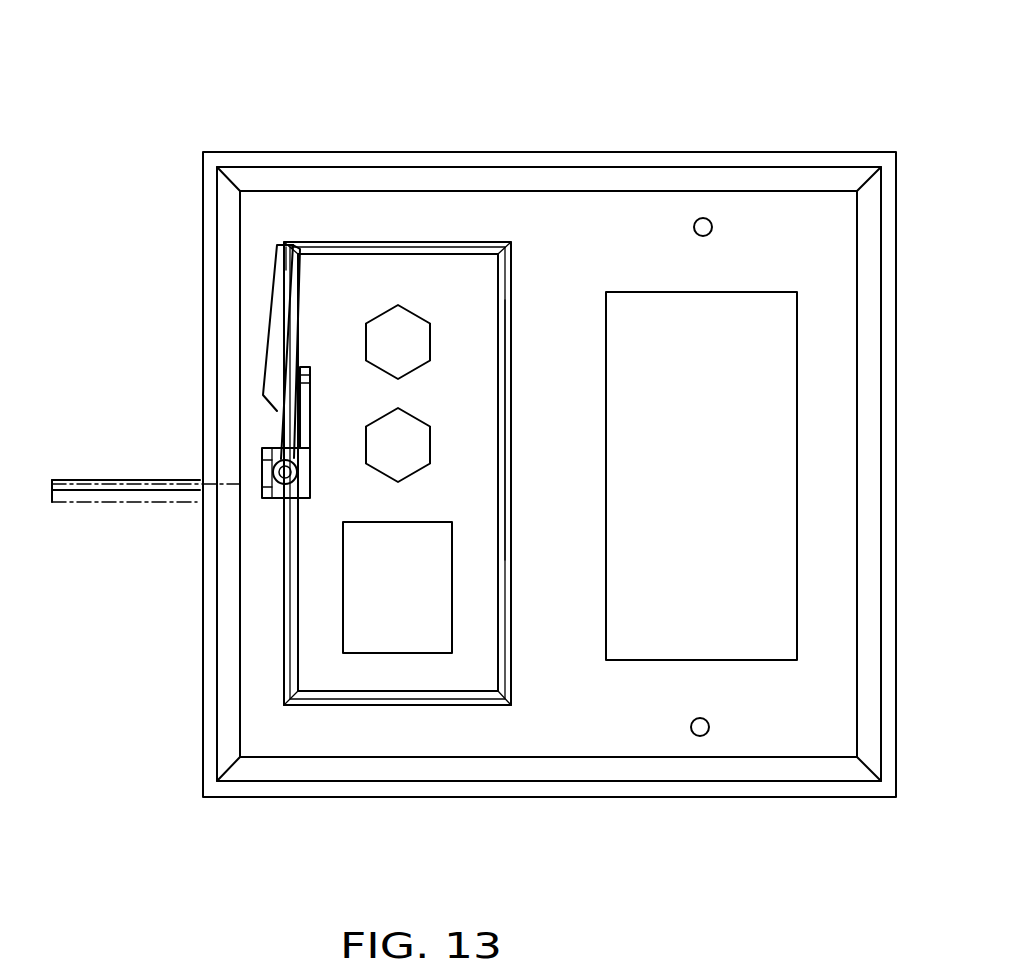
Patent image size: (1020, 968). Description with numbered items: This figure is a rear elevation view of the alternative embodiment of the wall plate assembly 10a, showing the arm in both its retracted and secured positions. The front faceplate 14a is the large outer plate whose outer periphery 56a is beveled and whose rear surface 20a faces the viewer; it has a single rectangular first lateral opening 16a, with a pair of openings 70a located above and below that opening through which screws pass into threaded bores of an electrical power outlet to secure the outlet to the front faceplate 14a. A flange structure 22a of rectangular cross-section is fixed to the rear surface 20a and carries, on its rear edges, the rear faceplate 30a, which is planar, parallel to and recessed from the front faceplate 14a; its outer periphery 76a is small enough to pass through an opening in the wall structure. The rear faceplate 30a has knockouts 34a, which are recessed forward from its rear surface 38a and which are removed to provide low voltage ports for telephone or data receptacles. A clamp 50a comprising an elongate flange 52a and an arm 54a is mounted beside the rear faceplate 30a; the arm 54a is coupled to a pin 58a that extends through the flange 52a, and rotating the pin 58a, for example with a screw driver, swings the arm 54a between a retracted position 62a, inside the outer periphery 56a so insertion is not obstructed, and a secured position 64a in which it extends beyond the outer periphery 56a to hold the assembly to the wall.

The wall plate assembly 10a is at (445, 117).
The front faceplate 14a is at (600, 249).
The first lateral opening 16a is at (721, 484).
The rear surface 20a is at (580, 719).
The flange structure 22a is at (538, 426).
The rear faceplate 30a is at (370, 296).
The knockouts 34a is at (400, 347).
The rear surface 38a is at (485, 516).
The clamp 50a is at (334, 484).
The elongate flange 52a is at (312, 398).
The arm 54a is at (268, 333).
The outer periphery 56a is at (593, 150).
The pin 58a is at (285, 472).
The retracted position 62a is at (277, 263).
The secured position 64a is at (67, 505).
The openings 70a is at (712, 226).
The outer periphery 76a is at (337, 707).